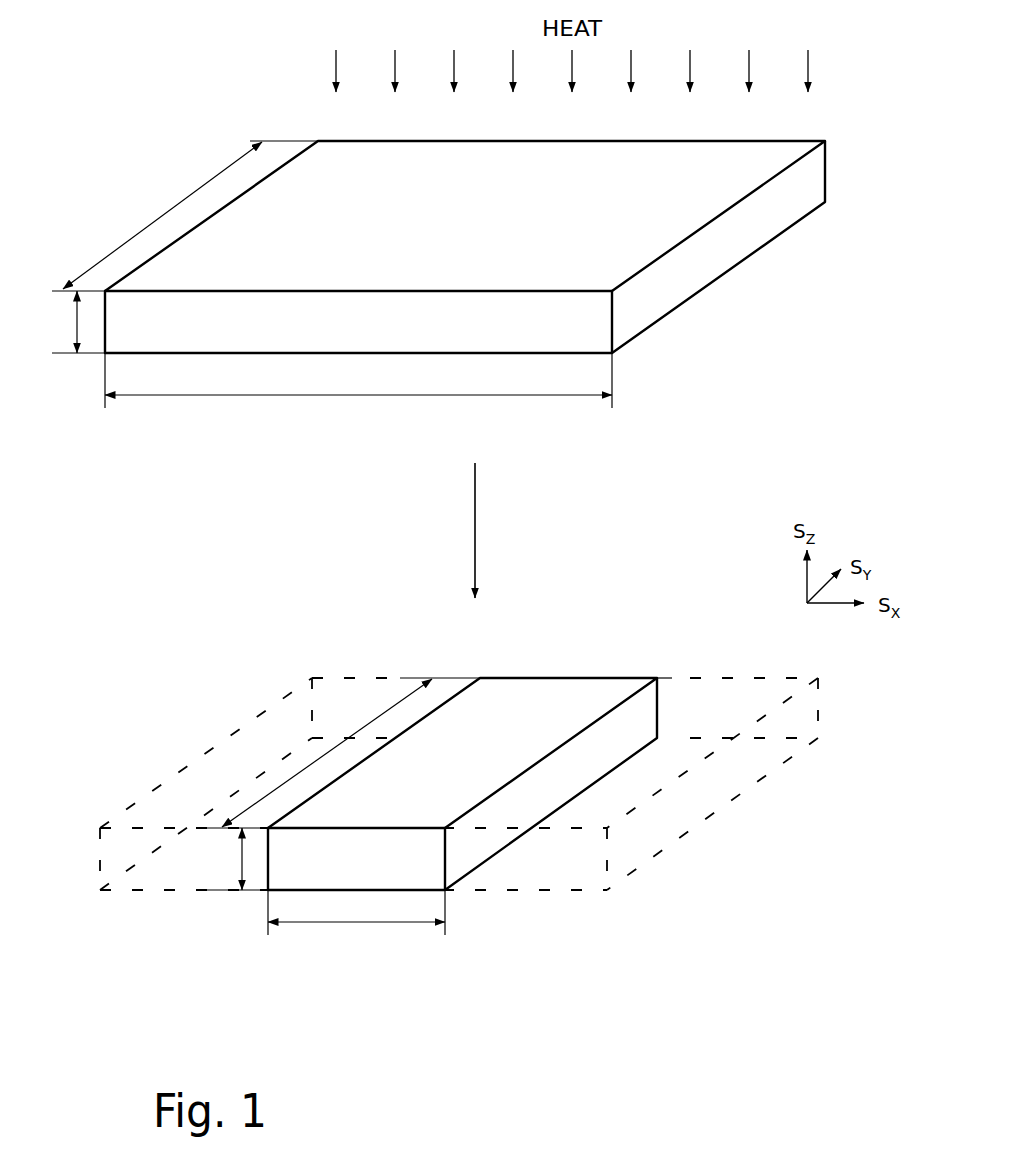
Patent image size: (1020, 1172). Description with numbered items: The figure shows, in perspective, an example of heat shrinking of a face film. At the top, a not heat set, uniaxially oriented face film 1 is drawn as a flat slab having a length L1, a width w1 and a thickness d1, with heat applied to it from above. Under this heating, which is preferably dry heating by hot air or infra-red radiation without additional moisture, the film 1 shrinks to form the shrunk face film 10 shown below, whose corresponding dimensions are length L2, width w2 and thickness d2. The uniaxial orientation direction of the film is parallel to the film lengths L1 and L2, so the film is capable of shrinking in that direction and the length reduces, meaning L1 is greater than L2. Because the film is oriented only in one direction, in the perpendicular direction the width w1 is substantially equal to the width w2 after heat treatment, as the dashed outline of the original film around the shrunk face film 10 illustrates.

The face film 1 is at (304, 115).
The shrunk face film 10 is at (450, 670).
The width of a label film prior to shrinking w1 is at (185, 216).
The thickness of a label film prior to shrinking d1 is at (71, 322).
The length of a label film prior to shrinking L1 is at (358, 390).
The width of a shrunk label film w2 is at (320, 757).
The thickness of a shrunk label film d2 is at (234, 859).
The length of a shrunk label film L2 is at (356, 912).